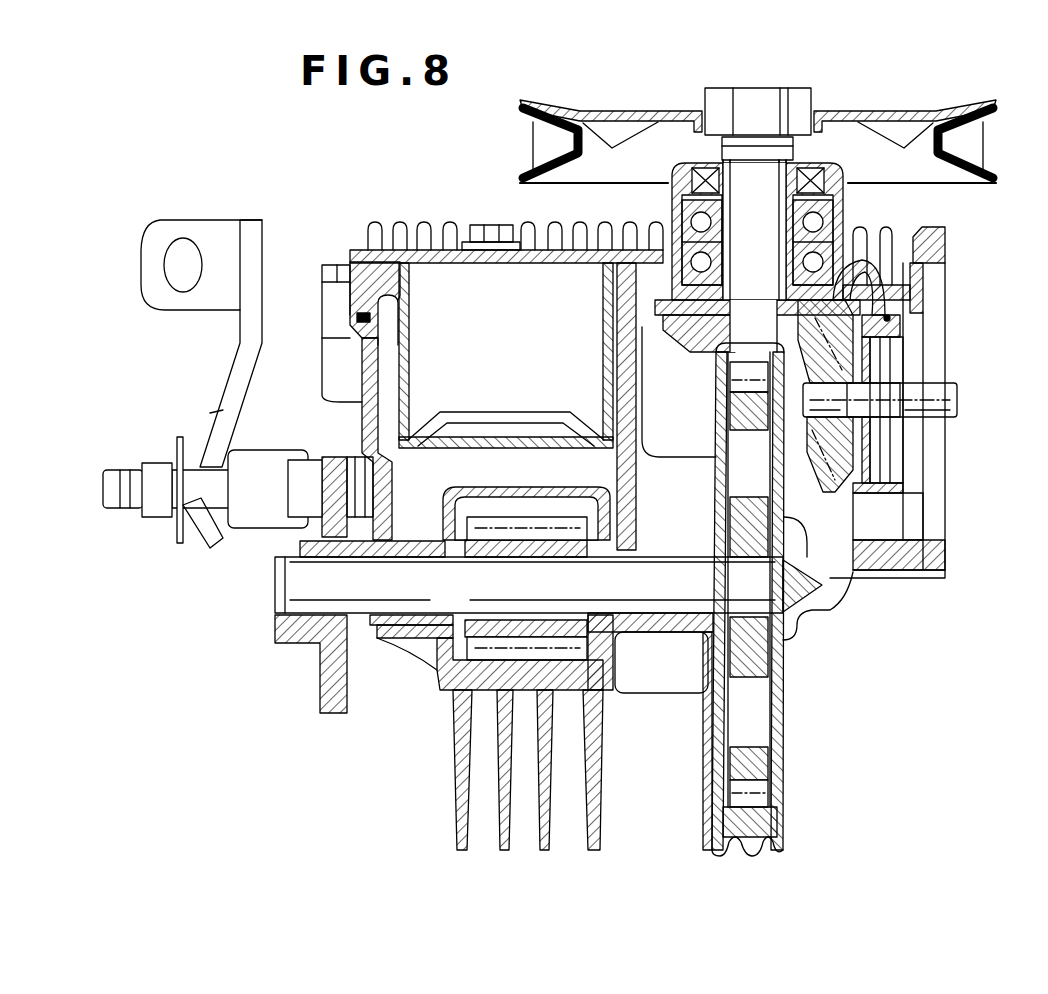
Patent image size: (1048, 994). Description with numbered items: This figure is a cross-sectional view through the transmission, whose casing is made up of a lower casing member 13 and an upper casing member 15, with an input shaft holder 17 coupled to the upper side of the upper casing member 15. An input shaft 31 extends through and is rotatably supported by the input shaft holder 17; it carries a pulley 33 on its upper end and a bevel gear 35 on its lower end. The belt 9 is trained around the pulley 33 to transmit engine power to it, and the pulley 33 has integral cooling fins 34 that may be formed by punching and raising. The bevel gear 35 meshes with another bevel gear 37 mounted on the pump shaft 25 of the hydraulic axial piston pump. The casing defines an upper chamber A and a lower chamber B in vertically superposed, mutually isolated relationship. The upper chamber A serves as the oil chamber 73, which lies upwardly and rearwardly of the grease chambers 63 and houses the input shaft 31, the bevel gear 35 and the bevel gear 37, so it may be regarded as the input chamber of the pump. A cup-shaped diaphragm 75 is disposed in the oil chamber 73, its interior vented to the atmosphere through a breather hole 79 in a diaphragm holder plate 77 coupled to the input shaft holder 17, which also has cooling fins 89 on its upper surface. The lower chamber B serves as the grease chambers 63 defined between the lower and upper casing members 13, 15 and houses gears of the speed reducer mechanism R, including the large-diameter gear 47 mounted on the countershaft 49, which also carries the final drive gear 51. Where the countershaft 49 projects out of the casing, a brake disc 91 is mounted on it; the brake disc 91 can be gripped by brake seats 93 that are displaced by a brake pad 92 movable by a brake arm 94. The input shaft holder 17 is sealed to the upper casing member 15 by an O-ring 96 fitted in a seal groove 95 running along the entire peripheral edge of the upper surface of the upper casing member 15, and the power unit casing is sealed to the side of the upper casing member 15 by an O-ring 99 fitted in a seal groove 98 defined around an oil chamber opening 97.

The belt 9 is at (552, 135).
The lower casing member 13 is at (450, 645).
The upper casing member 15 is at (925, 575).
The input shaft holder 17 is at (835, 248).
The pump shaft 25 is at (958, 397).
The input shaft 31 is at (745, 292).
The pulley 33 is at (993, 103).
The cooling fins 34 is at (643, 138).
The bevel gear 35 is at (682, 332).
The bevel gear 37 is at (838, 485).
The large-diameter gear 47 is at (745, 828).
The countershaft 49 is at (655, 640).
The final drive gear 51 is at (513, 523).
The grease chambers 63 is at (585, 680).
The oil chamber 73 is at (420, 463).
The cup-shaped diaphragm 75 is at (365, 347).
The diaphragm holder plate 77 is at (432, 250).
The breather hole 79 is at (505, 263).
The cooling fins 89 is at (588, 232).
The brake disc 91 is at (338, 713).
The brake pad 92 is at (250, 517).
The brake seats 93 is at (362, 500).
The brake arm 94 is at (245, 325).
The seal groove 95 is at (890, 318).
The O-ring 96 is at (360, 313).
The oil chamber opening 97 is at (930, 525).
The seal groove 98 is at (950, 553).
The O-ring 99 is at (947, 243).
The upper chamber A is at (835, 567).
The lower chamber B is at (530, 690).
The speed reducer mechanism R is at (842, 652).